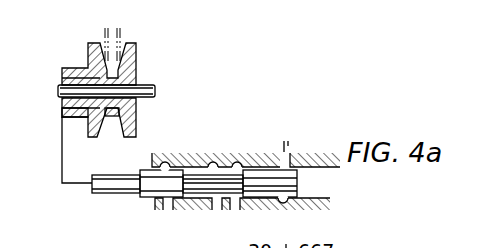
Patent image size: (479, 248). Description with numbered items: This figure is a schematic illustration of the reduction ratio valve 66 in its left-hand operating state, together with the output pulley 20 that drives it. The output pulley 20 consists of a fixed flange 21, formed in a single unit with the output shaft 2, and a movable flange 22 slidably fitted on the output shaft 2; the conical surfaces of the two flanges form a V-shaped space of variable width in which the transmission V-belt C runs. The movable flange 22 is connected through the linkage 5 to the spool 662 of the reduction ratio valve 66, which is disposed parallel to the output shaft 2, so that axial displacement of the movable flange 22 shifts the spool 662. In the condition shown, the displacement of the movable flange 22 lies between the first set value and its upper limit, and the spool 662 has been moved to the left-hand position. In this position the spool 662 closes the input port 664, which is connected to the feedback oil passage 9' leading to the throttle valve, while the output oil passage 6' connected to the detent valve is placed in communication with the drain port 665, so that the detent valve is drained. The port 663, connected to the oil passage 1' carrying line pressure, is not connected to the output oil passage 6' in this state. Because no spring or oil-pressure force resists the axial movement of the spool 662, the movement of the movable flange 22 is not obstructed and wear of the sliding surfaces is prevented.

The output pulley 20 is at (145, 74).
The output shaft 2 is at (157, 92).
The fixed flange 21 is at (138, 121).
The movable flange 22 is at (91, 124).
The transmission V-belt C is at (110, 118).
The linkage 5 is at (69, 186).
The spool 662 is at (116, 195).
The input port 664 is at (158, 203).
The reduction ratio valve 66 is at (256, 162).
The port 663 is at (293, 162).
The oil passage 1' is at (286, 146).
The feedback oil passage 9' is at (188, 216).
The drain port 665 is at (212, 205).
The output oil passage 6' is at (280, 213).